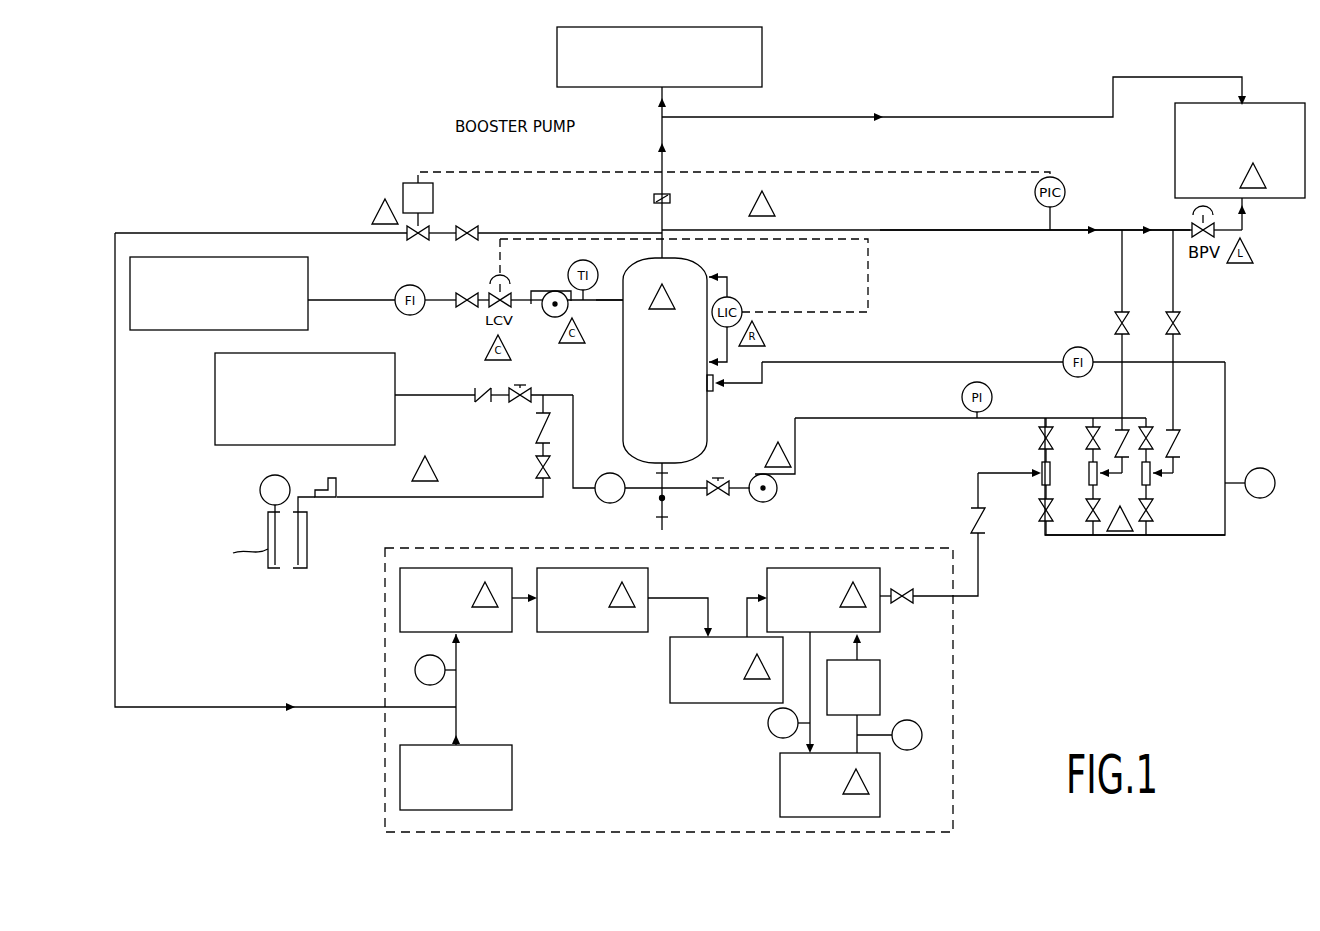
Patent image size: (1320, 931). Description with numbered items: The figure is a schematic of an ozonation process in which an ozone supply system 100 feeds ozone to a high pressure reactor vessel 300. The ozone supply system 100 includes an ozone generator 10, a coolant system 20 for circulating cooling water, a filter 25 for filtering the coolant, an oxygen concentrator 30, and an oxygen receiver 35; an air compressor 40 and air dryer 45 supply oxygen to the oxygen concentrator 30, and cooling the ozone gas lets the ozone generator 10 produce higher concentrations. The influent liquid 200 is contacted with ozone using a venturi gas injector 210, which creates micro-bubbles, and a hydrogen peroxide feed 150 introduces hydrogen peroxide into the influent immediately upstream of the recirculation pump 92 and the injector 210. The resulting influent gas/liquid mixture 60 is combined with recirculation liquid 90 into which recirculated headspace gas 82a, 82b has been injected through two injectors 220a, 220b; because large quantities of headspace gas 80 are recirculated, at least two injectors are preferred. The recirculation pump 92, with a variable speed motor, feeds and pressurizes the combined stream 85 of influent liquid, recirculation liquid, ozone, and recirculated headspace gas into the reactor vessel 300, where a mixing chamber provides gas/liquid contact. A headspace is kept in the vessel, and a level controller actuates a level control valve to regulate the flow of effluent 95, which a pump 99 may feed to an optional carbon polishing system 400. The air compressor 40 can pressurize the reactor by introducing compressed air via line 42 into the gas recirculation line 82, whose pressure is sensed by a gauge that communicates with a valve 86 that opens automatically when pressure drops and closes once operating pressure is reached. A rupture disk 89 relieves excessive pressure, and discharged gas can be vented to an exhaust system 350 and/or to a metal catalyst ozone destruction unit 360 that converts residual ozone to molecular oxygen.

The ozone generator 10 is at (818, 616).
The coolant system 20 is at (819, 805).
The filter 25 is at (868, 700).
The oxygen concentrator 30 is at (587, 616).
The oxygen receiver 35 is at (721, 688).
The air compressor 40 is at (473, 793).
The line 42 is at (213, 707).
The air dryer 45 is at (450, 616).
The influent gas/liquid mixture 60 is at (1072, 537).
The headspace gas 80 is at (655, 247).
The gas recirculation line 82 is at (1013, 231).
The recirculated headspace gas 82a is at (1122, 292).
The recirculated headspace gas 82b is at (1173, 292).
The combined stream 85 is at (1225, 425).
The valve 86 is at (418, 183).
The rupture disk 89 is at (654, 200).
The recirculation liquid 90 is at (668, 482).
The recirculation pump 92 is at (758, 473).
The effluent 95 is at (610, 300).
The pump 99 is at (556, 291).
The ozone supply system 100 is at (713, 690).
The hydrogen peroxide feed 150 is at (268, 520).
The influent liquid 200 is at (395, 368).
The venturi gas injector 210 is at (1042, 485).
The injector 220a is at (1090, 485).
The injector 220b is at (1152, 485).
The reactor vessel 300 is at (623, 375).
The exhaust system 350 is at (762, 45).
The ozone destruction unit 360 is at (1175, 152).
The carbon polishing system 400 is at (308, 272).